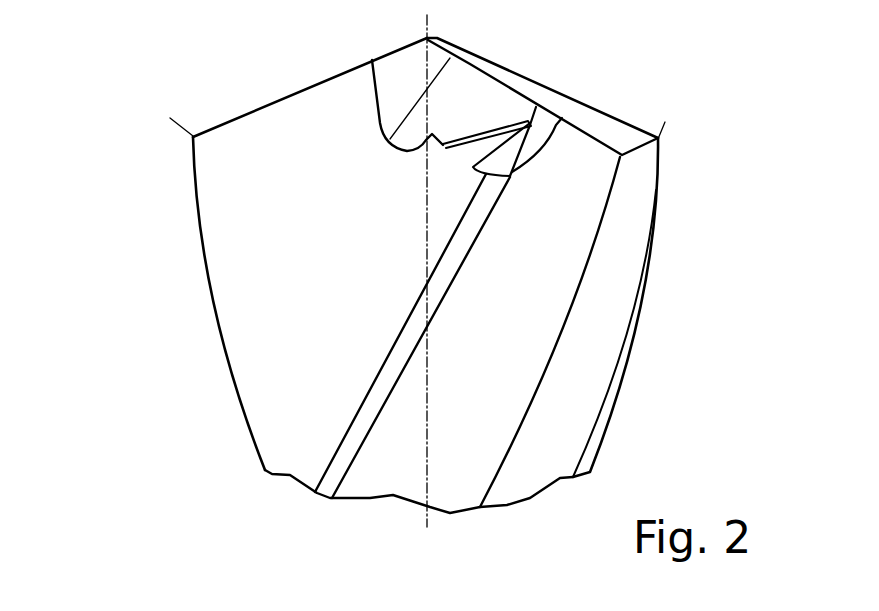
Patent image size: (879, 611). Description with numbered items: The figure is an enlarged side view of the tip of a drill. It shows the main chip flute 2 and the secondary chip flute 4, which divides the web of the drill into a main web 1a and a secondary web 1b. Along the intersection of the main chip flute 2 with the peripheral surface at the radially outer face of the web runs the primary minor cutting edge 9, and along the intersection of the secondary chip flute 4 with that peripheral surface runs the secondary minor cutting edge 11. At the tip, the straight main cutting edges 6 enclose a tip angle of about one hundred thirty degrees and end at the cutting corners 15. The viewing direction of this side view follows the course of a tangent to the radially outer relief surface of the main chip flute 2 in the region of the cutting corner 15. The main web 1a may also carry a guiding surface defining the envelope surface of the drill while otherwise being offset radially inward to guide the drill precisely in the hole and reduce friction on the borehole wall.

The cutting corner 15 is at (193, 136).
The main cutting edge 6 is at (265, 108).
The main chip flute 2 is at (273, 277).
The secondary chip flute 4 is at (562, 207).
The primary minor cutting edge 9 is at (602, 422).
The main web 1a is at (593, 330).
The secondary minor cutting edge 11 is at (466, 258).
The secondary web 1b is at (378, 398).